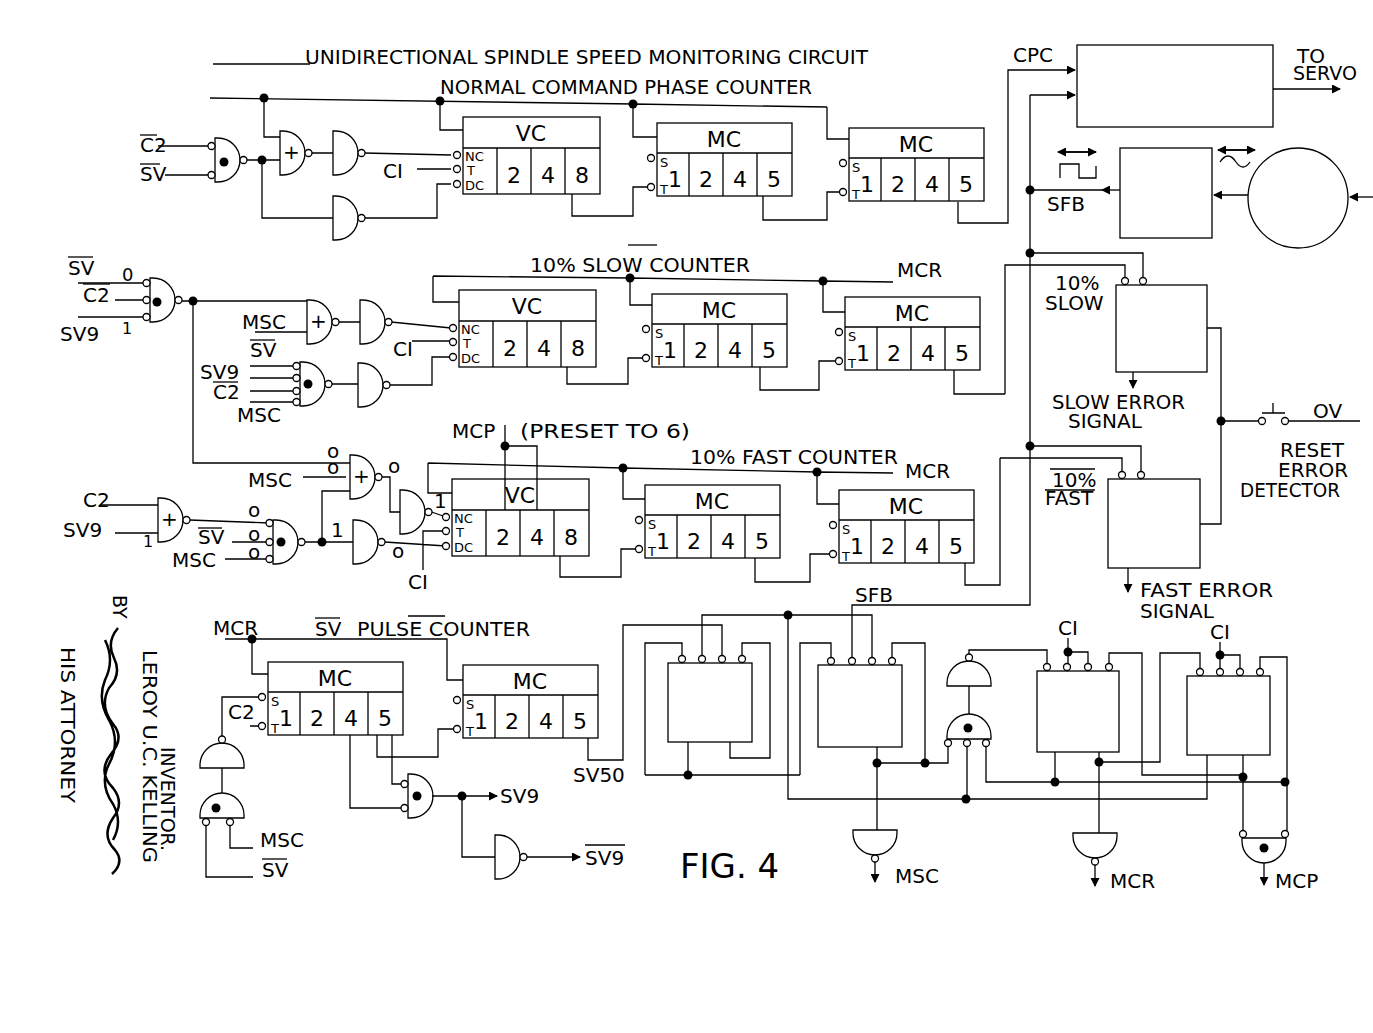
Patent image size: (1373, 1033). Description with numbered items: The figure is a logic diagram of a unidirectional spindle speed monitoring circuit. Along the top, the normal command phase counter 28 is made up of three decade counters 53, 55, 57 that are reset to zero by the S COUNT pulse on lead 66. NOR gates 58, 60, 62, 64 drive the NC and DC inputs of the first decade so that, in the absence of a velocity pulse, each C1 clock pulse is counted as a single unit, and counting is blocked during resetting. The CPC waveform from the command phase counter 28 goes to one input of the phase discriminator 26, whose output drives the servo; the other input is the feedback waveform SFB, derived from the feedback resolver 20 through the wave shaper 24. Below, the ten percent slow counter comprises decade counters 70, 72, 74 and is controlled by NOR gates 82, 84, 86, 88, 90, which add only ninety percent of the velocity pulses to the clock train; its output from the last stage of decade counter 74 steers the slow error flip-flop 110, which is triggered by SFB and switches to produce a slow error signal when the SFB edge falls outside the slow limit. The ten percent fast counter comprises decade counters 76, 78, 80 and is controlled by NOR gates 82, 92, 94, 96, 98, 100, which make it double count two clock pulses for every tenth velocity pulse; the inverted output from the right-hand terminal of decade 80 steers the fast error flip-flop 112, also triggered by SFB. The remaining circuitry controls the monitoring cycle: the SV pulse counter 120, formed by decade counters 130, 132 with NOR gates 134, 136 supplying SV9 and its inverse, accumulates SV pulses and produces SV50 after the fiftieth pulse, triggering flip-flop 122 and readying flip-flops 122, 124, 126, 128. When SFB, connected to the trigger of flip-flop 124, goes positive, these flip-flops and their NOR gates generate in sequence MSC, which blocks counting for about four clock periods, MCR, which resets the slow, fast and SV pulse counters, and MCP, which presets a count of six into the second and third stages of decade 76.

The feedback resolver 20 is at (1336, 166).
The wave shaper 24 is at (1212, 228).
The phase discriminator 26 is at (1273, 100).
The normal command phase counter 28 is at (642, 234).
The decade counter 53 is at (536, 196).
The decade counter 55 is at (740, 200).
The decade counter 57 is at (932, 205).
The NOR gate 58 is at (240, 143).
The NOR gate 60 is at (290, 173).
The NOR gate 62 is at (354, 134).
The NOR gate 64 is at (350, 238).
The lead 66 is at (368, 96).
The decade counter 70 is at (500, 367).
The decade counter 72 is at (708, 369).
The decade counter 74 is at (904, 370).
The decade counter 76 is at (522, 556).
The decade counter 78 is at (730, 559).
The decade counter 80 is at (893, 566).
The NOR gate 82 is at (186, 274).
The NOR gate 84 is at (333, 295).
The NOR gate 86 is at (386, 295).
The NOR gate 88 is at (315, 404).
The NOR gate 90 is at (384, 403).
The NOR gate 92 is at (365, 462).
The NOR gate 94 is at (185, 500).
The NOR gate 96 is at (295, 564).
The NOR gate 98 is at (405, 490).
The NOR gate 100 is at (348, 564).
The slow error flip-flop 110 is at (1207, 306).
The fast error flip-flop 112 is at (1200, 560).
The SV pulse counter 120 is at (428, 605).
The flip-flop 122 is at (710, 699).
The flip-flop 124 is at (860, 703).
The flip-flop 126 is at (1078, 708).
The flip-flop 128 is at (1228, 712).
The decade counter 130 is at (337, 735).
The decade counter 132 is at (552, 740).
The NOR gate 134 is at (428, 815).
The NOR gate 136 is at (512, 877).